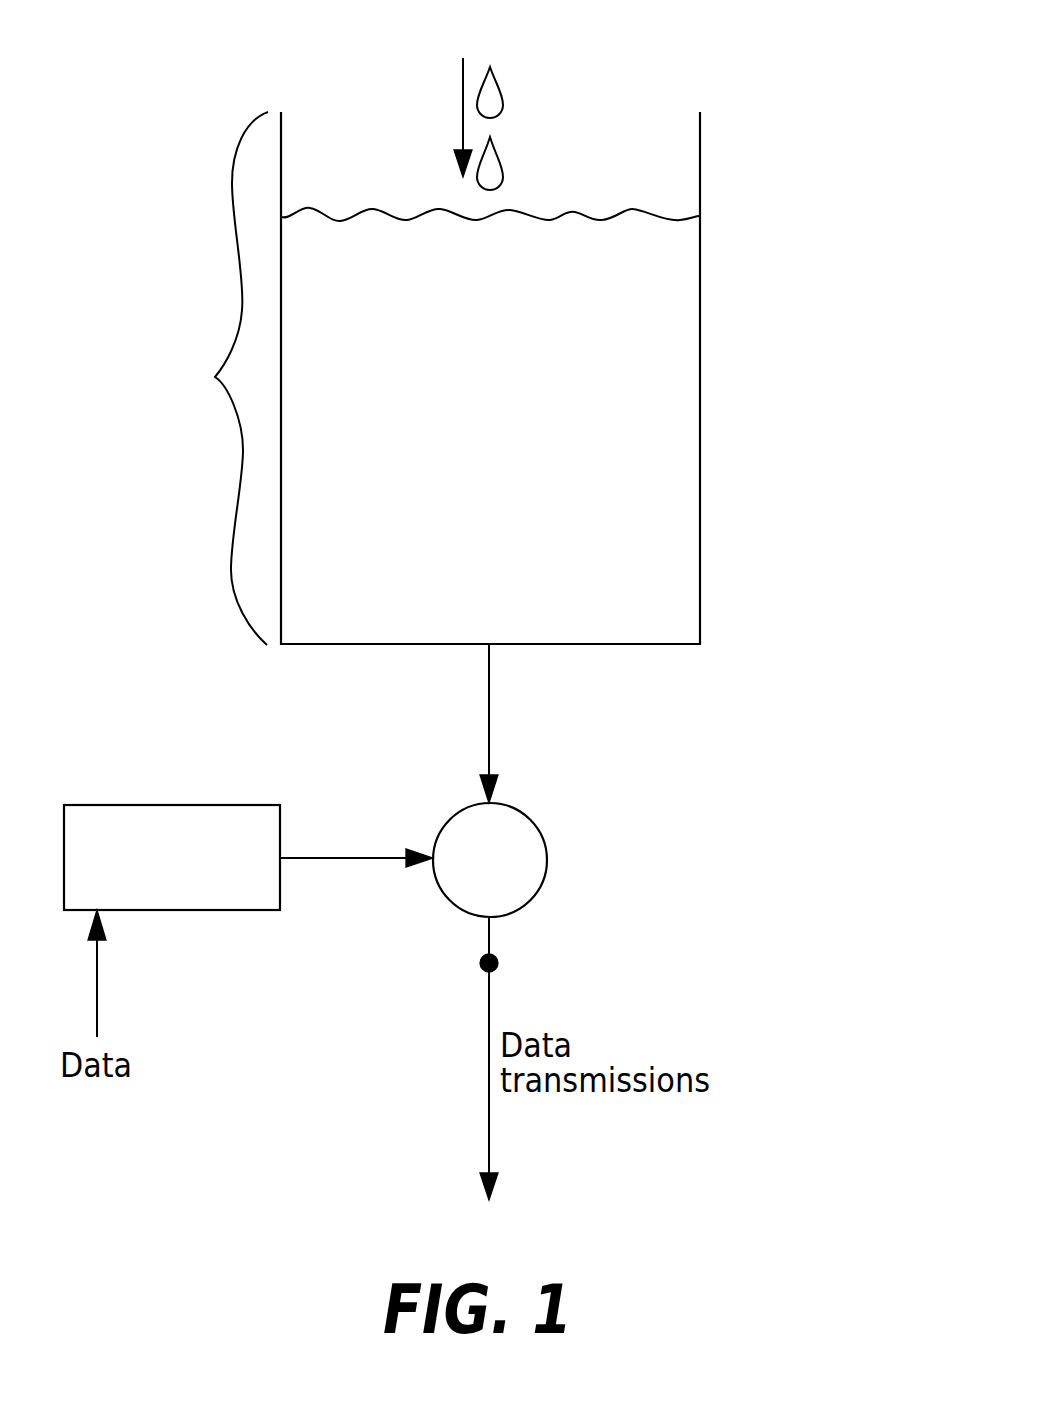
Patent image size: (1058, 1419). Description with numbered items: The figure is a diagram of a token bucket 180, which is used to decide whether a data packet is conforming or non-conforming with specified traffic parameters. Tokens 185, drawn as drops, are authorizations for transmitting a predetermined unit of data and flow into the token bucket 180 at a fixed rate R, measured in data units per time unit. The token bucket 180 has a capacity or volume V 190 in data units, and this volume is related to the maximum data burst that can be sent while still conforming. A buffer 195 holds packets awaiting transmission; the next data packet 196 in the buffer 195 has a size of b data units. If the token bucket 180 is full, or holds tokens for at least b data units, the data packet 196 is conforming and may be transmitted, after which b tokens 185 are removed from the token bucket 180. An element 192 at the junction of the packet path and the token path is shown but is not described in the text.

The token bucket 180 is at (770, 471).
The tokens 185 is at (503, 165).
The volume V 190 is at (215, 377).
The transmission gate 192 is at (528, 820).
The buffer 195 is at (163, 805).
The data packet 196 is at (497, 962).